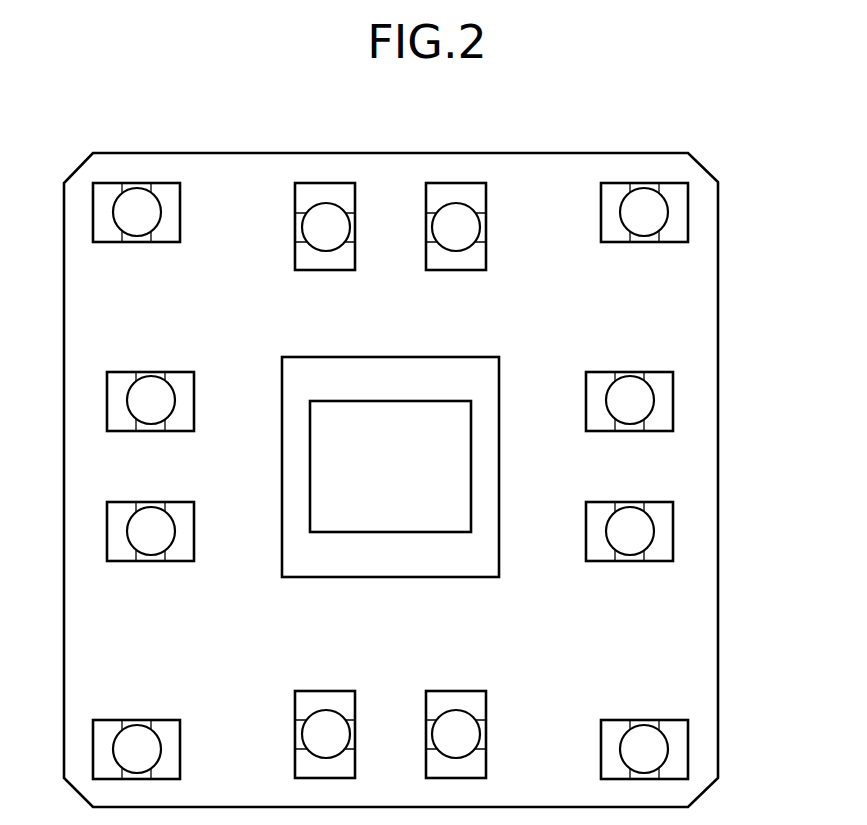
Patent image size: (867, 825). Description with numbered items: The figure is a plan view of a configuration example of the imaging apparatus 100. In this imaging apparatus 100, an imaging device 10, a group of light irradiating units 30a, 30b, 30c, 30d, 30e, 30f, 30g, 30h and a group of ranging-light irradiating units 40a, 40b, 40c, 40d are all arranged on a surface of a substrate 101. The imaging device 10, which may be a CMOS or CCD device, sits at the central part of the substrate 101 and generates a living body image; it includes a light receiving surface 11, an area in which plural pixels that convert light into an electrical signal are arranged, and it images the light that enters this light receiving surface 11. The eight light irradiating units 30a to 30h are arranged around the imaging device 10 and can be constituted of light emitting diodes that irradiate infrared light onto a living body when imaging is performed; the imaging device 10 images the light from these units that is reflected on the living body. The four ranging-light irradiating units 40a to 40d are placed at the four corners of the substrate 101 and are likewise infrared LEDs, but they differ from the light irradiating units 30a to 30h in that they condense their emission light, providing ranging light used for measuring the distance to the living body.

The imaging apparatus 100 is at (740, 147).
The substrate 101 is at (594, 153).
The imaging device 10 is at (500, 372).
The light receiving surface 11 is at (471, 428).
The light irradiating unit 30a is at (326, 270).
The light irradiating unit 30b is at (456, 270).
The light irradiating unit 30c is at (630, 431).
The light irradiating unit 30d is at (630, 561).
The light irradiating unit 30e is at (456, 691).
The light irradiating unit 30f is at (326, 691).
The light irradiating unit 30g is at (151, 561).
The light irradiating unit 30h is at (151, 431).
The ranging-light irradiating unit 40a is at (137, 242).
The ranging-light irradiating unit 40b is at (644, 242).
The ranging-light irradiating unit 40c is at (644, 720).
The ranging-light irradiating unit 40d is at (137, 720).